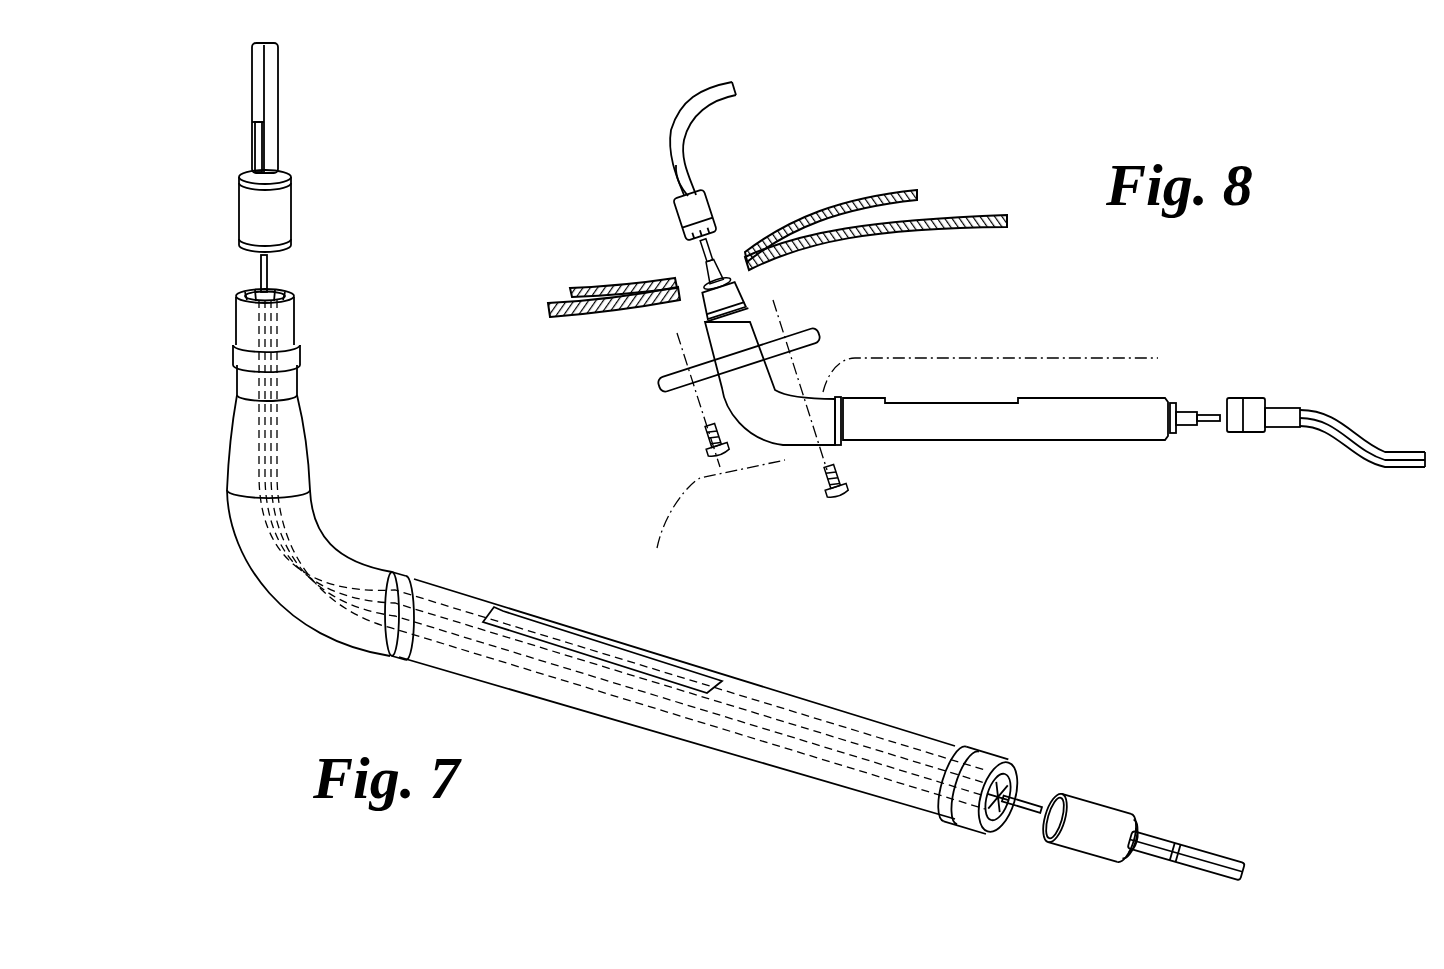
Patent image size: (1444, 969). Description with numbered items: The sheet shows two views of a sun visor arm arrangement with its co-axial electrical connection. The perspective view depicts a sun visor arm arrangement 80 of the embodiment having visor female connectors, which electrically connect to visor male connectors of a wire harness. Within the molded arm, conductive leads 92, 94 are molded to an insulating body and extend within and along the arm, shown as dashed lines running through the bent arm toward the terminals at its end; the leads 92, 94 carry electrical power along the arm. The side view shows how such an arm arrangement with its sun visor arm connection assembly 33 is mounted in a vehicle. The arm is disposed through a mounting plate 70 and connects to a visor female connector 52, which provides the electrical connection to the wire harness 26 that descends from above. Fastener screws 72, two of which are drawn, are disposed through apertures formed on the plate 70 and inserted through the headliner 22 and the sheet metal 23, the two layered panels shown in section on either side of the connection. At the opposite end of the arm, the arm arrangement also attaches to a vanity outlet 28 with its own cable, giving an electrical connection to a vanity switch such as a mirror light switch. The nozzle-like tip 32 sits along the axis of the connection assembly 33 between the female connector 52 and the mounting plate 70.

In FIG. 7, the sun visor arm arrangement 80 is at (207, 486).
In FIG. 7, the conductive lead 92 is at (262, 540).
In FIG. 7, the conductive lead 94 is at (268, 603).
In FIG. 8, the wire harness 26 is at (672, 122).
In FIG. 8, the visor female connector 52 is at (677, 222).
In FIG. 8, the sun visor arm connection assembly 33 is at (724, 199).
In FIG. 8, the nozzle 32 is at (760, 290).
In FIG. 8, the mounting plate 70 is at (660, 388).
In FIG. 8, the fastener screws 72 is at (702, 437).
In FIG. 8, the sheet metal 23 is at (603, 288).
In FIG. 8, the headliner 22 is at (595, 318).
In FIG. 8, the vanity outlet 28 is at (1243, 432).